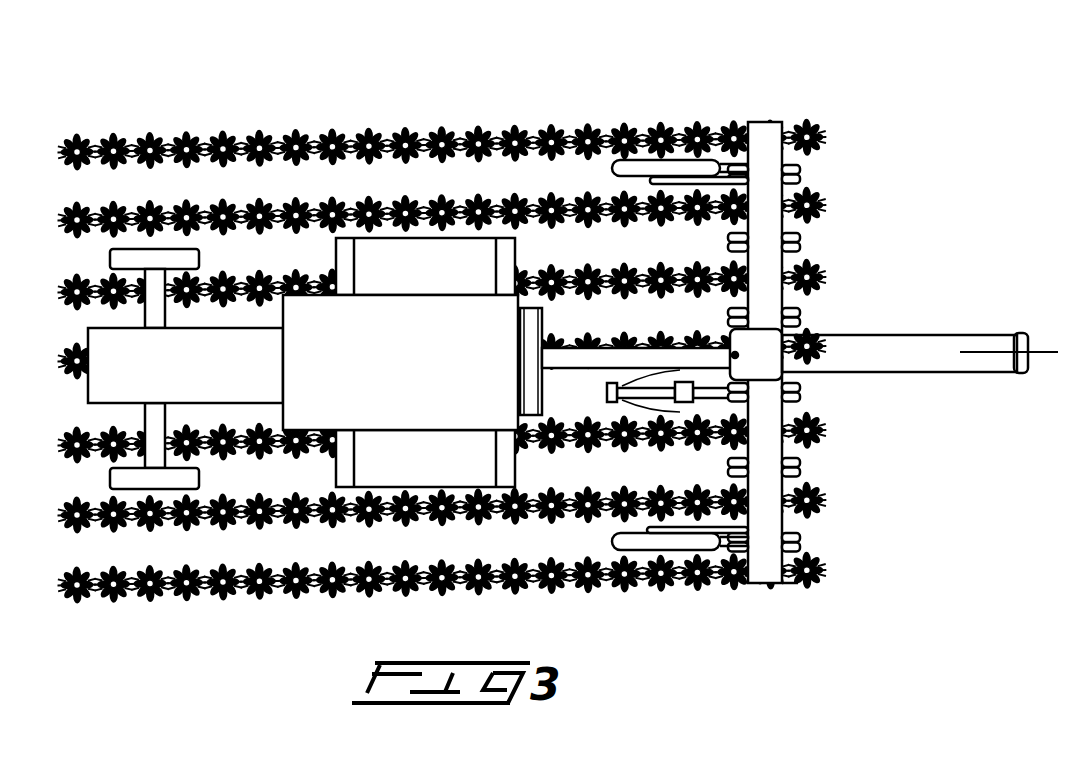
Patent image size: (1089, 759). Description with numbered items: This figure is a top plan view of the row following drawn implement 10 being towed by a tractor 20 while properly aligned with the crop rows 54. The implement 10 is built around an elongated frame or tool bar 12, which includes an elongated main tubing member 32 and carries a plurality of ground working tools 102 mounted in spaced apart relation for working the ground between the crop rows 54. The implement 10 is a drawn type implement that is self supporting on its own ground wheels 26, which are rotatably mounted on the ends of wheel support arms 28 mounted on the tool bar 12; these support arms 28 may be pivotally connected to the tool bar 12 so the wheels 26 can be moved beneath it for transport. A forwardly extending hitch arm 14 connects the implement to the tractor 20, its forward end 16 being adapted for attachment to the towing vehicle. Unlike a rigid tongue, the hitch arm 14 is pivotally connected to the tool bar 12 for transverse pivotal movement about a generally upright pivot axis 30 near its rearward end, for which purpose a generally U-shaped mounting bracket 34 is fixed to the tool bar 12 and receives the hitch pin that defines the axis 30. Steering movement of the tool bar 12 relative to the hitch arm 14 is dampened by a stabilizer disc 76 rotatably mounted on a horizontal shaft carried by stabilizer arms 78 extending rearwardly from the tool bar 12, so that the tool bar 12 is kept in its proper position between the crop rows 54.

The row following drawn implement 10 is at (580, 329).
The tool bar 12 is at (713, 357).
The hitch arm 14 is at (655, 358).
The forward end of hitch arm 16 is at (548, 350).
The tractor 20 is at (443, 257).
The ground wheels 26 is at (626, 160).
The wheel support arms 28 is at (650, 181).
The pivot axis 30 is at (735, 352).
The main tubing member 32 is at (768, 486).
The mounting bracket 34 is at (790, 386).
The crop rows 54 is at (336, 130).
The stabilizer disc 76 is at (1045, 352).
The stabilizer arms 78 is at (903, 335).
The ground working tools 102 is at (800, 172).